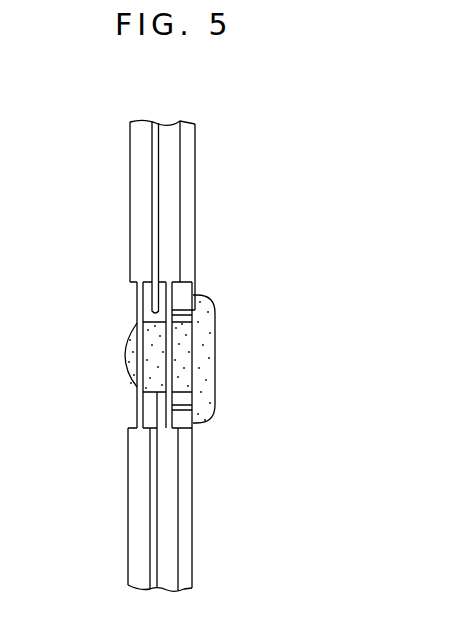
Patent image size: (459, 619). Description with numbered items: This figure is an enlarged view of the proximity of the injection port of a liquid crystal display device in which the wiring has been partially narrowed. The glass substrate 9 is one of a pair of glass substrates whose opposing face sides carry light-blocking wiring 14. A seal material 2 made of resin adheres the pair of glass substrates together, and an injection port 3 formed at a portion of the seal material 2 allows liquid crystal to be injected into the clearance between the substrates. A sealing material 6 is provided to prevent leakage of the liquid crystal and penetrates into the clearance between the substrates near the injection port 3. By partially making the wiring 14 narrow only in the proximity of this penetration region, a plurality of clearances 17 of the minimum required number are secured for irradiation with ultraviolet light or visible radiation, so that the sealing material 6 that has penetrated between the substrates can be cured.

The wiring 14 is at (140, 150).
The seal material 2 is at (160, 306).
The injection port 3 is at (118, 358).
The sealing material 6 is at (207, 352).
The clearances 17 is at (150, 405).
The glass substrate 9 is at (183, 479).